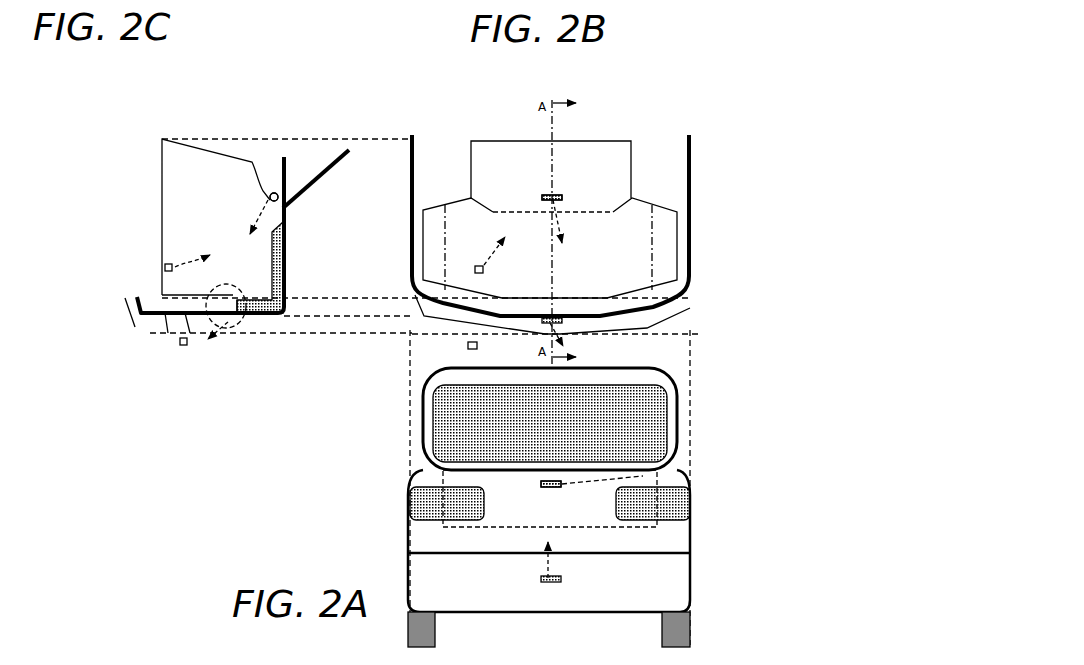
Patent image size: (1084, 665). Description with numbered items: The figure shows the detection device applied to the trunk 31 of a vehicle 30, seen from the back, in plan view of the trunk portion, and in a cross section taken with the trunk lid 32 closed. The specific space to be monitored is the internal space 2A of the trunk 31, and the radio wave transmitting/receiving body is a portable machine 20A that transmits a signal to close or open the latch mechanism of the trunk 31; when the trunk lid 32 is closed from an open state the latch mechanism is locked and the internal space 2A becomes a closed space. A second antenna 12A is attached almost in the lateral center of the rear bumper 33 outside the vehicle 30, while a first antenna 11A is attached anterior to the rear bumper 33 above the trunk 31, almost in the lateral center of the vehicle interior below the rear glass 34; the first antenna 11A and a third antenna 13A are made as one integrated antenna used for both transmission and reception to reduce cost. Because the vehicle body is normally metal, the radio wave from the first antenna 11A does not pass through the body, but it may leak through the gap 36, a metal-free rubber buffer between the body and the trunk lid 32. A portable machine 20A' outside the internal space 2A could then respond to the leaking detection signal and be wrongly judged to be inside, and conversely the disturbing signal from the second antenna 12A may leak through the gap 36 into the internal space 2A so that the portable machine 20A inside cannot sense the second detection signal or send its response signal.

In FIG. 2C, the internal space 2A is at (229, 253).
In FIG. 2B, the internal space 2A is at (587, 231).
In FIG. 2C, the first antenna 11A is at (284, 192).
In FIG. 2B, the first antenna 11A is at (560, 193).
In FIG. 2A, the first antenna 11A is at (657, 453).
In FIG. 2C, the third antenna 13A is at (274, 197).
In FIG. 2B, the third antenna 13A is at (552, 197).
In FIG. 2A, the third antenna 13A is at (551, 484).
In FIG. 2C, the second antenna 12A is at (163, 337).
In FIG. 2B, the second antenna 12A is at (615, 325).
In FIG. 2A, the second antenna 12A is at (565, 580).
In FIG. 2C, the portable machine 20A is at (116, 269).
In FIG. 2B, the portable machine 20A is at (457, 188).
In FIG. 2C, the portable machine 20A' is at (184, 370).
In FIG. 2B, the portable machine 20A' is at (430, 351).
In FIG. 2A, the vehicle 30 is at (545, 507).
In FIG. 2C, the trunk 31 is at (160, 192).
In FIG. 2B, the trunk 31 is at (680, 258).
In FIG. 2A, the trunk 31 is at (658, 527).
In FIG. 2C, the trunk lid 32 is at (284, 307).
In FIG. 2B, the trunk lid 32 is at (652, 242).
In FIG. 2A, the trunk lid 32 is at (450, 480).
In FIG. 2C, the rear bumper 33 is at (140, 326).
In FIG. 2B, the rear bumper 33 is at (690, 307).
In FIG. 2A, the rear bumper 33 is at (440, 583).
In FIG. 2C, the rear glass 34 is at (310, 183).
In FIG. 2A, the rear glass 34 is at (635, 428).
In FIG. 2C, the gap 36 is at (226, 326).